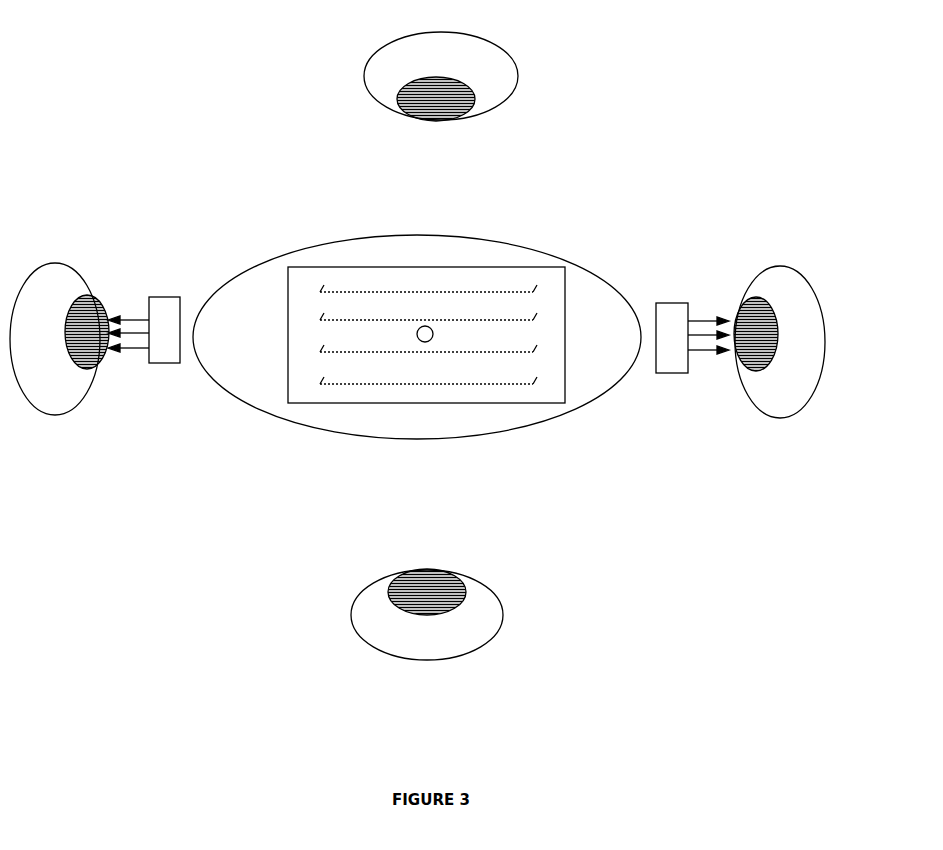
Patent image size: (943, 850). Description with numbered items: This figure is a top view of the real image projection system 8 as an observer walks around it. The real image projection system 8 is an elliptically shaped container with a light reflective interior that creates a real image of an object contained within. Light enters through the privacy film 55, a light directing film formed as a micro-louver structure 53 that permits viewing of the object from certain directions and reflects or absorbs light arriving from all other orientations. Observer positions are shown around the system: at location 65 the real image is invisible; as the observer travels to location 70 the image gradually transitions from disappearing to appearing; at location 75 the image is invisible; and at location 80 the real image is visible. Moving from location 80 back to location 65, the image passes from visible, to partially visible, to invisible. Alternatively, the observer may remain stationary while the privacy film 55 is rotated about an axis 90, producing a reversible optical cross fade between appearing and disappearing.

The real image projection system 8 is at (493, 456).
The micro-louver structure 53 is at (467, 292).
The privacy film 55 is at (288, 318).
The location 65 is at (503, 610).
The location 70 is at (800, 270).
The location 75 is at (517, 75).
The location 80 is at (80, 267).
The axis 90 is at (419, 340).